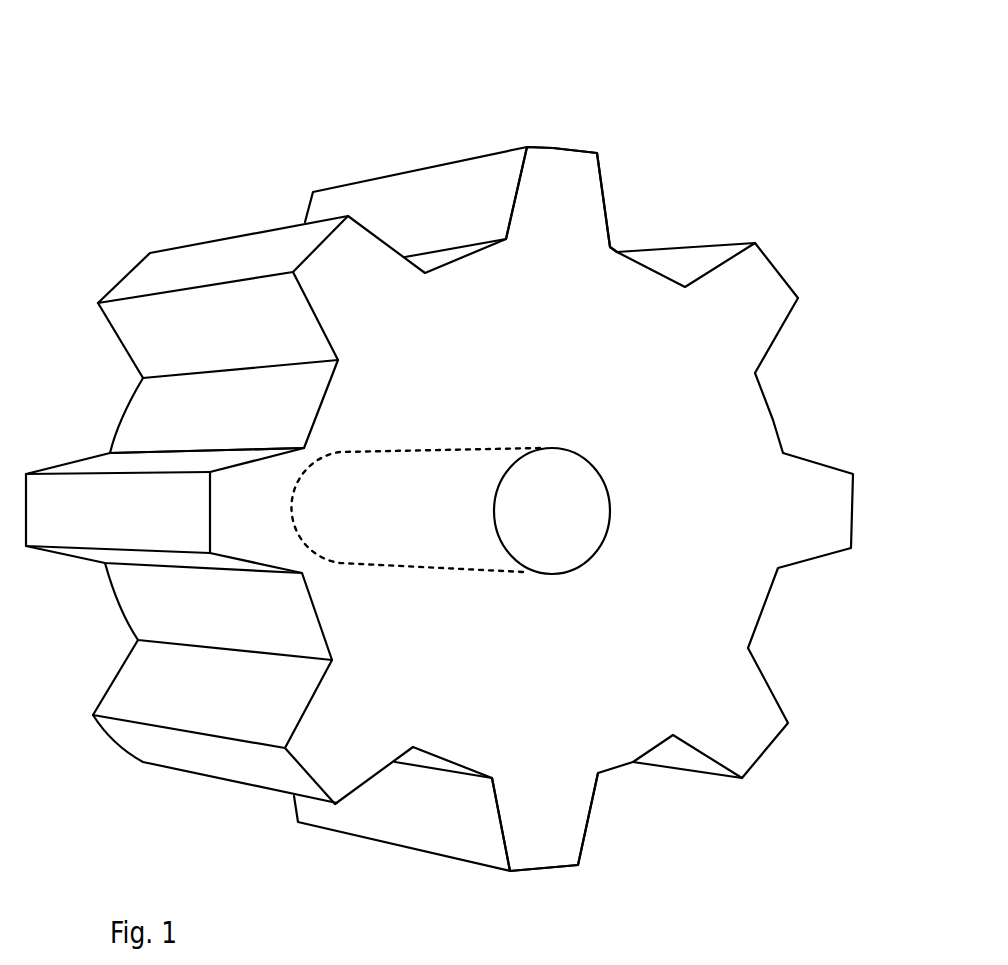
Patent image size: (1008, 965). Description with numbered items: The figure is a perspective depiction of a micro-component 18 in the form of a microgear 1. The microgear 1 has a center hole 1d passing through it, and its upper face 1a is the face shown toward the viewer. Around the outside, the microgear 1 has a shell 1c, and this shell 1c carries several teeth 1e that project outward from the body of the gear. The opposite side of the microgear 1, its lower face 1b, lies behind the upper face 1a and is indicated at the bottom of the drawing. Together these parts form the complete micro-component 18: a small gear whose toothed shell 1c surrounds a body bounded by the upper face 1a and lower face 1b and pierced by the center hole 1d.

The microgear 1 is at (439, 444).
The micro-component 18 is at (439, 444).
The upper face 1a is at (628, 288).
The lower face 1b is at (295, 808).
The shell 1c is at (197, 263).
The center hole 1d is at (577, 497).
The teeth 1e is at (558, 135).